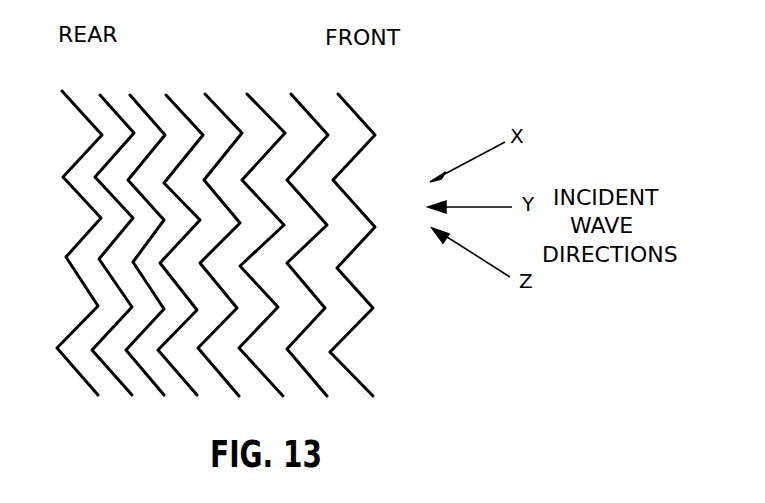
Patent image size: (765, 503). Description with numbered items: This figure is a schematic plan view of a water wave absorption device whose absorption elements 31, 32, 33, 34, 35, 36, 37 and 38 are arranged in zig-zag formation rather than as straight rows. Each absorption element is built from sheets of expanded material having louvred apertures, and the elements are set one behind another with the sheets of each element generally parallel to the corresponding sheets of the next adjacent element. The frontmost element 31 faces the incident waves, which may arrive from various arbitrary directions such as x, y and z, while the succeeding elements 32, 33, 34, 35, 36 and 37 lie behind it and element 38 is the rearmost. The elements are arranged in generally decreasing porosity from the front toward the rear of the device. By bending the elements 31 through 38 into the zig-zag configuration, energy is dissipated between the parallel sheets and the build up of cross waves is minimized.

The absorption element 31 is at (348, 228).
The absorption element 32 is at (304, 228).
The absorption element 33 is at (262, 228).
The absorption element 34 is at (220, 228).
The absorption element 35 is at (180, 227).
The absorption element 36 is at (145, 227).
The absorption element 37 is at (112, 227).
The absorption element 38 is at (77, 227).